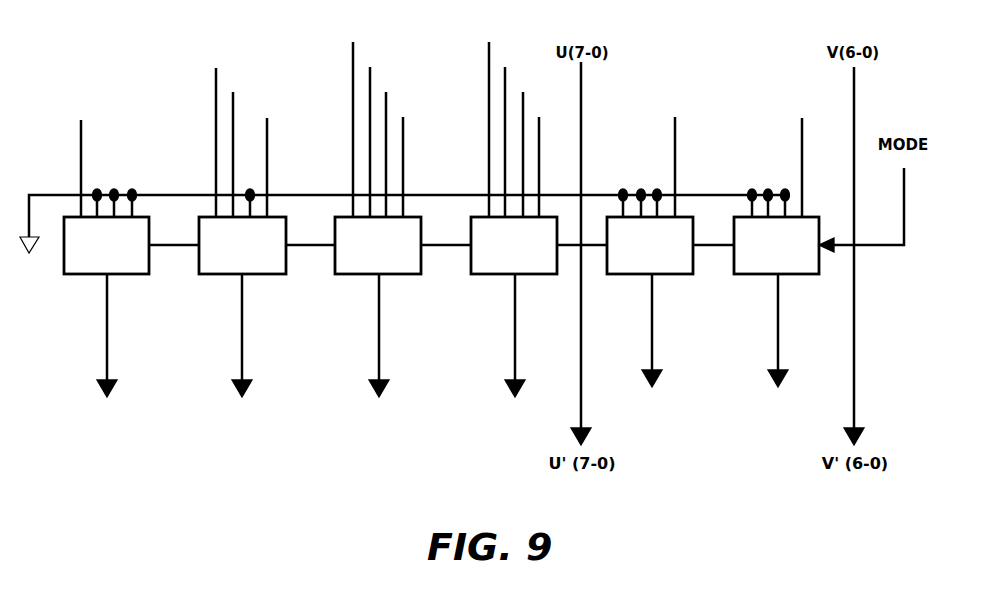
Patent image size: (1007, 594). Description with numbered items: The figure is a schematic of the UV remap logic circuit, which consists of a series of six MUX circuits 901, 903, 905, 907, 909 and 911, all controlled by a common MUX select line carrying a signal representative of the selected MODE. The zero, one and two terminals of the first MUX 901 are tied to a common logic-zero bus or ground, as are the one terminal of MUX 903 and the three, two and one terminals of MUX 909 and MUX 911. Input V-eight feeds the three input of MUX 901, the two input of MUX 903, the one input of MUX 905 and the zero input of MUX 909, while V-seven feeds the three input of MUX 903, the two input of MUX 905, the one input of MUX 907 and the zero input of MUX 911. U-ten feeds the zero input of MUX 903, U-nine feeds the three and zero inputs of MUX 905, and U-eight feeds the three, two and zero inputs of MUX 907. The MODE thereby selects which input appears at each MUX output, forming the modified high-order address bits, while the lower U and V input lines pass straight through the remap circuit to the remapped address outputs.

The first MUX circuit 901 is at (130, 280).
The MUX circuit 903 is at (267, 280).
The MUX circuit 905 is at (395, 280).
The MUX circuit 907 is at (530, 280).
The MUX circuit 909 is at (652, 280).
The MUX circuit 911 is at (793, 280).